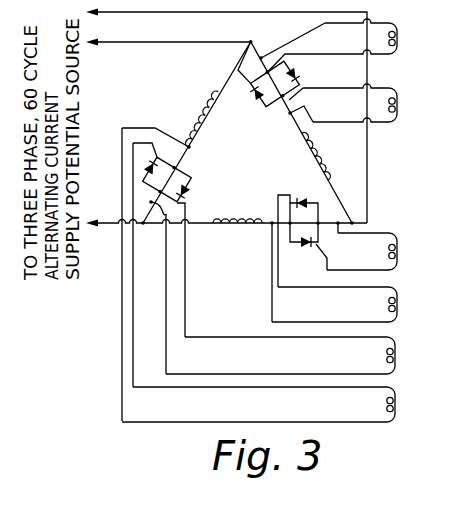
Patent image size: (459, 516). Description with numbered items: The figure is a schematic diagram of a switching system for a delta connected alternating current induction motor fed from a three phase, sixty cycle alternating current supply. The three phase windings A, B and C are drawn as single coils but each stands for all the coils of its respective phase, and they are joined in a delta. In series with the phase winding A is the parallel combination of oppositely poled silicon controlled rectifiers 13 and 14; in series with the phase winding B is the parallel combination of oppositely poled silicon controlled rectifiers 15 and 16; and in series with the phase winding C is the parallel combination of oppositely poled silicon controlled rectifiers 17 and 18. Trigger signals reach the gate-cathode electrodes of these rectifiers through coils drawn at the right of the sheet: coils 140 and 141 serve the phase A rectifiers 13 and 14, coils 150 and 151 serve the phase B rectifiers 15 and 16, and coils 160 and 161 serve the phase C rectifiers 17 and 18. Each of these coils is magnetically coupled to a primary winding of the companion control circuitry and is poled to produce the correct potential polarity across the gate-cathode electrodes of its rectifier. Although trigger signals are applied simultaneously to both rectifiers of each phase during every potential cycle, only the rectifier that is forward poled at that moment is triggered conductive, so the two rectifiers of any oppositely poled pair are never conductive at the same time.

The silicon controlled rectifier 13 is at (164, 178).
The silicon controlled rectifier 14 is at (190, 188).
The silicon controlled rectifier 15 is at (297, 71).
The silicon controlled rectifier 16 is at (255, 99).
The silicon controlled rectifier 17 is at (306, 246).
The silicon controlled rectifier 18 is at (303, 199).
The phase winding A is at (208, 102).
The phase winding B is at (323, 154).
The phase winding C is at (238, 226).
The coil 150 is at (397, 33).
The coil 151 is at (397, 97).
The coil 160 is at (388, 251).
The coil 161 is at (388, 300).
The coil 140 is at (396, 361).
The coil 141 is at (396, 407).